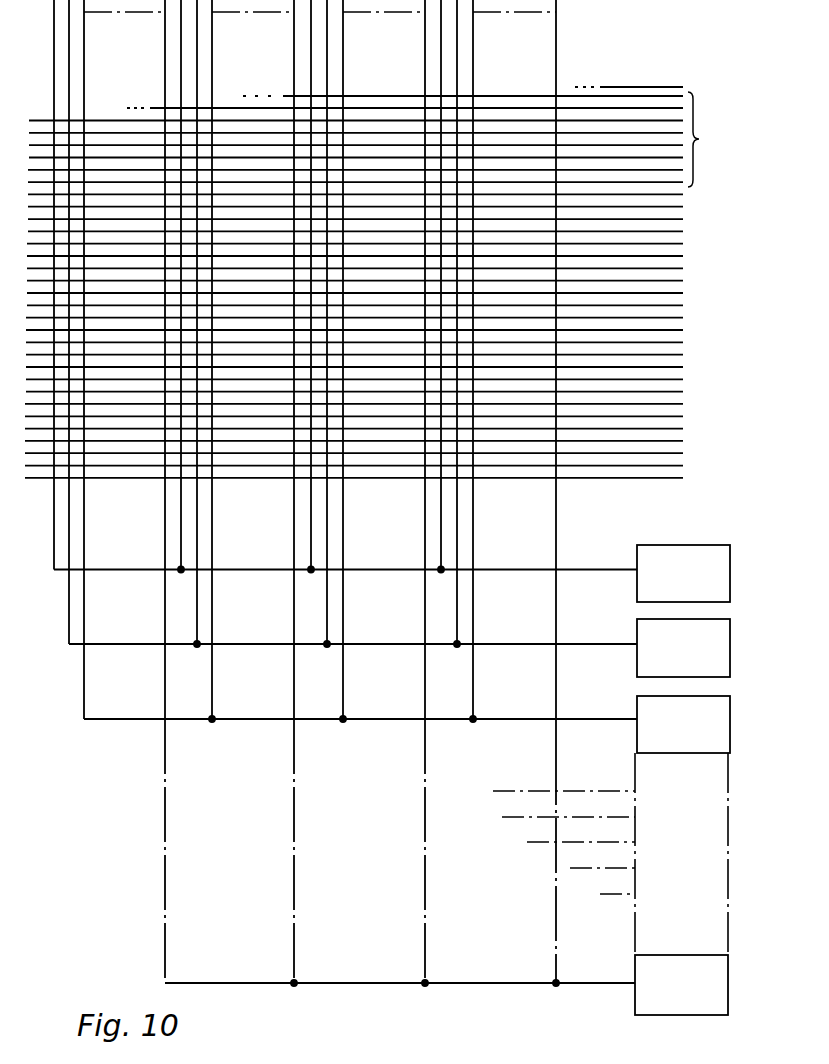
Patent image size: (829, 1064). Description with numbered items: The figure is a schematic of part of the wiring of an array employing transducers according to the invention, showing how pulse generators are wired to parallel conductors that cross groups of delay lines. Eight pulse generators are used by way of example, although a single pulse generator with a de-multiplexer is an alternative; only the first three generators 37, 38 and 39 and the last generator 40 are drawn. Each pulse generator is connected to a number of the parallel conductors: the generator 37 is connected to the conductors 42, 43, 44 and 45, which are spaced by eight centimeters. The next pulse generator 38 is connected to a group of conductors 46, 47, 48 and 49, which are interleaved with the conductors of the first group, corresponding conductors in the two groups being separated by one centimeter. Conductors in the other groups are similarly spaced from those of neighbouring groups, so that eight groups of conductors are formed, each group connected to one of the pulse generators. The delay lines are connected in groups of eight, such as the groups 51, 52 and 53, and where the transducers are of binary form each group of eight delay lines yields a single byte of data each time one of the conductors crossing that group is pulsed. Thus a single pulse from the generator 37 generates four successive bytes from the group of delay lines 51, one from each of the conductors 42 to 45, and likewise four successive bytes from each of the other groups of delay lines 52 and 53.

The pulse generator 37 is at (663, 545).
The pulse generator 38 is at (637, 625).
The pulse generator 39 is at (637, 700).
The pulse generator 40 is at (635, 961).
The conductor 42 is at (54, 524).
The conductor 43 is at (181, 523).
The conductor 44 is at (311, 523).
The conductor 45 is at (441, 522).
The conductor 46 is at (69, 617).
The conductor 47 is at (197, 617).
The conductor 48 is at (327, 618).
The conductor 49 is at (457, 618).
The group of delay lines 51 is at (688, 389).
The group of delay lines 52 is at (688, 289).
The group of delay lines 53 is at (688, 190).